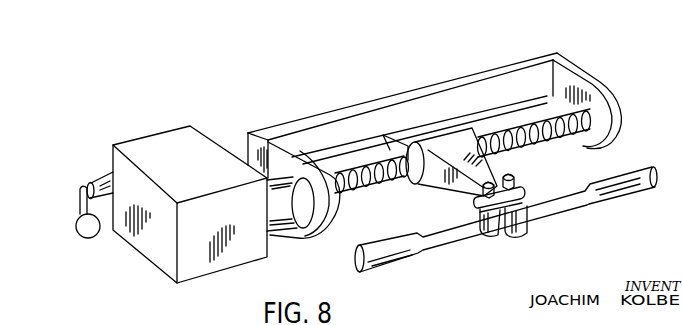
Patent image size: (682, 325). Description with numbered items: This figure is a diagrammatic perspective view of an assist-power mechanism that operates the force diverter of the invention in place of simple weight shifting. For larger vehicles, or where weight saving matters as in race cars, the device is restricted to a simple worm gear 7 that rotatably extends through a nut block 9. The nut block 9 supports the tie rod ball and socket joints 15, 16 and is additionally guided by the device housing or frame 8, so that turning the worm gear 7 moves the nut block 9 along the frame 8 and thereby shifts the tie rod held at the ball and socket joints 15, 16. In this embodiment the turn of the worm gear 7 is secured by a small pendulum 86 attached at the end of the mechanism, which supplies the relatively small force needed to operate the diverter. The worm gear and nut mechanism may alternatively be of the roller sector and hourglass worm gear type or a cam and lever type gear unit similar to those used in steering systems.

The worm gear 7 is at (540, 137).
The device housing or frame 8 is at (477, 76).
The nut block 9 is at (439, 183).
The tie rod ball and socket joint 15 is at (497, 238).
The tie rod ball and socket joint 16 is at (517, 236).
The pendulum 86 is at (79, 236).